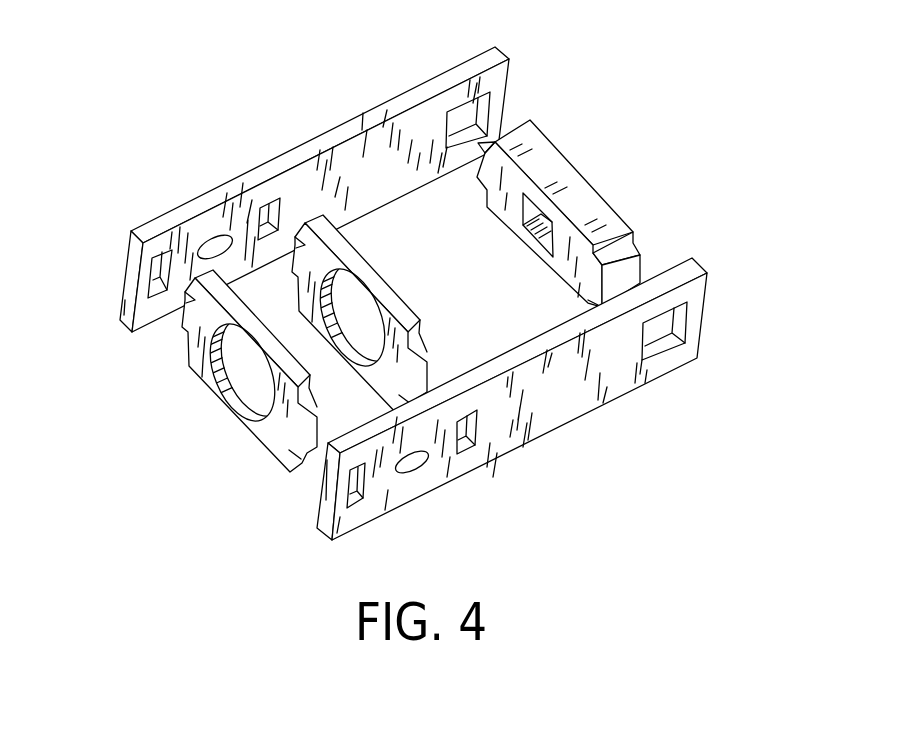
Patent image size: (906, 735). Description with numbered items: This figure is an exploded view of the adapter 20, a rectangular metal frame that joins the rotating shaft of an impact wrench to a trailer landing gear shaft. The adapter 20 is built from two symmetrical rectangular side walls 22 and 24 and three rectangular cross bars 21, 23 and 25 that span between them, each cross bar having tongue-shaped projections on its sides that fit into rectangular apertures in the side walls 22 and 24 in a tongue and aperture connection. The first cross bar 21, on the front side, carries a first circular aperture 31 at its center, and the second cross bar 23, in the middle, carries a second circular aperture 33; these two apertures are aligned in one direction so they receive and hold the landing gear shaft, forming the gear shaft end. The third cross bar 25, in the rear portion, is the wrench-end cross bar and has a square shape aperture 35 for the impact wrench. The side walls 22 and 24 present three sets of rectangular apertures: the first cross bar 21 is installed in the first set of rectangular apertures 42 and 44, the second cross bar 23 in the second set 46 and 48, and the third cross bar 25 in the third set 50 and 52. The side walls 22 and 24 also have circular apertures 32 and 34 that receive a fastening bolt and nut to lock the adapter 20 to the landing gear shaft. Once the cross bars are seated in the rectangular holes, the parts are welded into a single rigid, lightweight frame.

The adapter 20 is at (157, 146).
The first cross bar 21 is at (272, 462).
The side wall 22 is at (330, 137).
The second cross bar 23 is at (388, 301).
The side wall 24 is at (560, 393).
The third cross bar 25 is at (556, 183).
The first circular aperture 31 is at (249, 384).
The circular aperture 32 is at (210, 243).
The second circular aperture 33 is at (342, 313).
The circular aperture 34 is at (410, 465).
The square shape aperture 35 is at (577, 199).
The rectangular aperture 42 is at (162, 272).
The rectangular aperture 44 is at (362, 488).
The rectangular aperture 46 is at (262, 214).
The rectangular aperture 48 is at (480, 432).
The rectangular aperture 50 is at (466, 127).
The rectangular aperture 52 is at (662, 341).